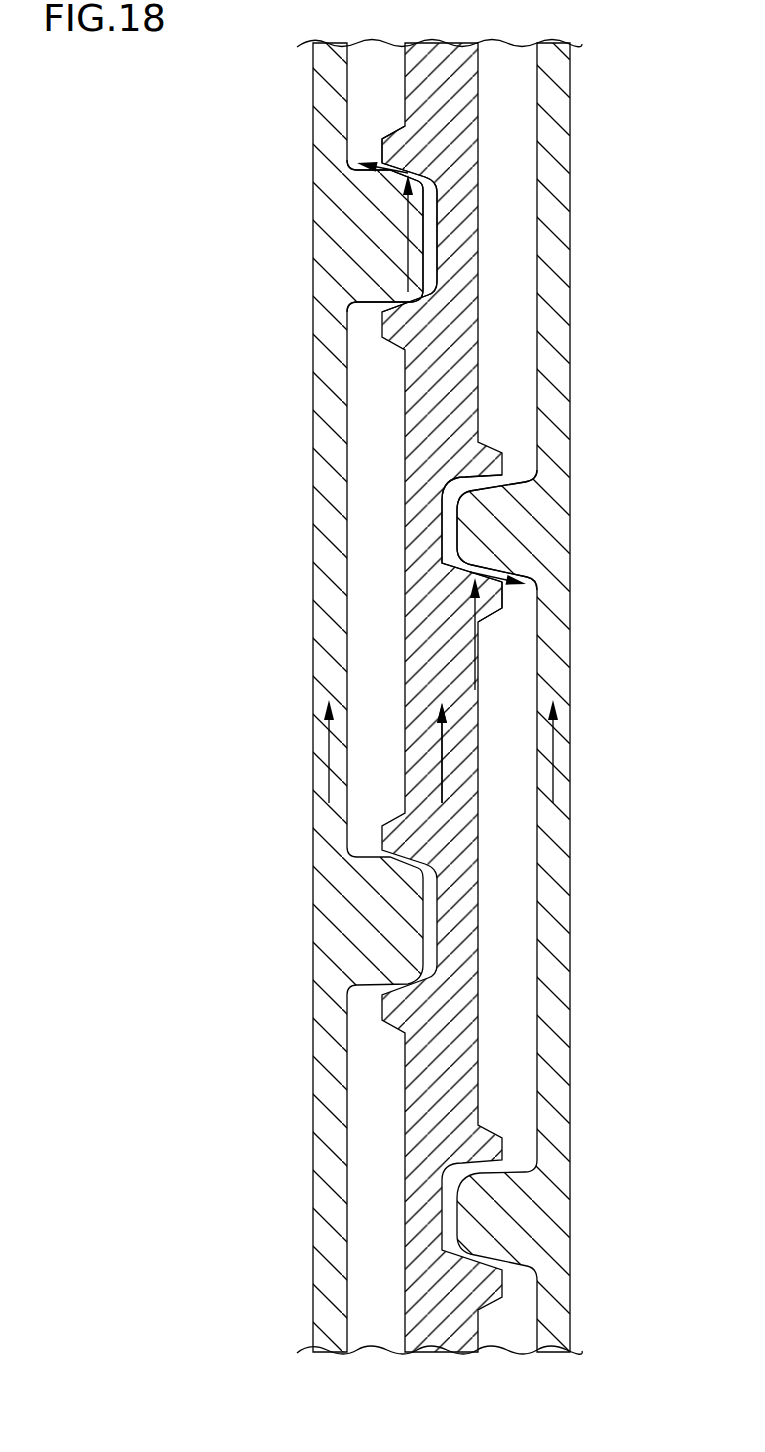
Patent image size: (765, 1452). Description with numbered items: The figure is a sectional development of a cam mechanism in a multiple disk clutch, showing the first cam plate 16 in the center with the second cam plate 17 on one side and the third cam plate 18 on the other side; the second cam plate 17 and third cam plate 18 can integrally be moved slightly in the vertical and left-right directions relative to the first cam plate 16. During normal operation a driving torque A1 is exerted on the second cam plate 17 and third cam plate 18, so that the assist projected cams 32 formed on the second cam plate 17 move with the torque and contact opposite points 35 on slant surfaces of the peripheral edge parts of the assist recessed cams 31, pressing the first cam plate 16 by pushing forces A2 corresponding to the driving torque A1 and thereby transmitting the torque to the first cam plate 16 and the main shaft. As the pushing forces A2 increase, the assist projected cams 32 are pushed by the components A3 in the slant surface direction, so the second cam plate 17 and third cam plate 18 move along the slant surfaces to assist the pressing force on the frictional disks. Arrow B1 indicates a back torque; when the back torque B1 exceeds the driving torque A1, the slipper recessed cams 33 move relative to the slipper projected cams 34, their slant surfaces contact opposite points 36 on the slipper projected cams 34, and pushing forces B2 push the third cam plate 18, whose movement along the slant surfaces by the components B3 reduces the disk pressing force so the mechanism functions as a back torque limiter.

The first cam plate 16 is at (437, 1073).
The second cam plate 17 is at (322, 1122).
The third cam plate 18 is at (550, 1090).
The assist recessed cam 31 is at (430, 233).
The assist projected cam 32 is at (368, 255).
The slipper recessed cam 33 is at (448, 522).
The slipper projected cam 34 is at (510, 510).
The opposite point 35 is at (407, 168).
The opposite point 36 is at (467, 568).
The driving torque A1 is at (328, 747).
The pushing force A2 is at (406, 226).
The component in slant surface direction A3 is at (392, 170).
The back torque B1 is at (442, 738).
The pushing force B2 is at (473, 653).
The component in slant surface direction B3 is at (513, 583).